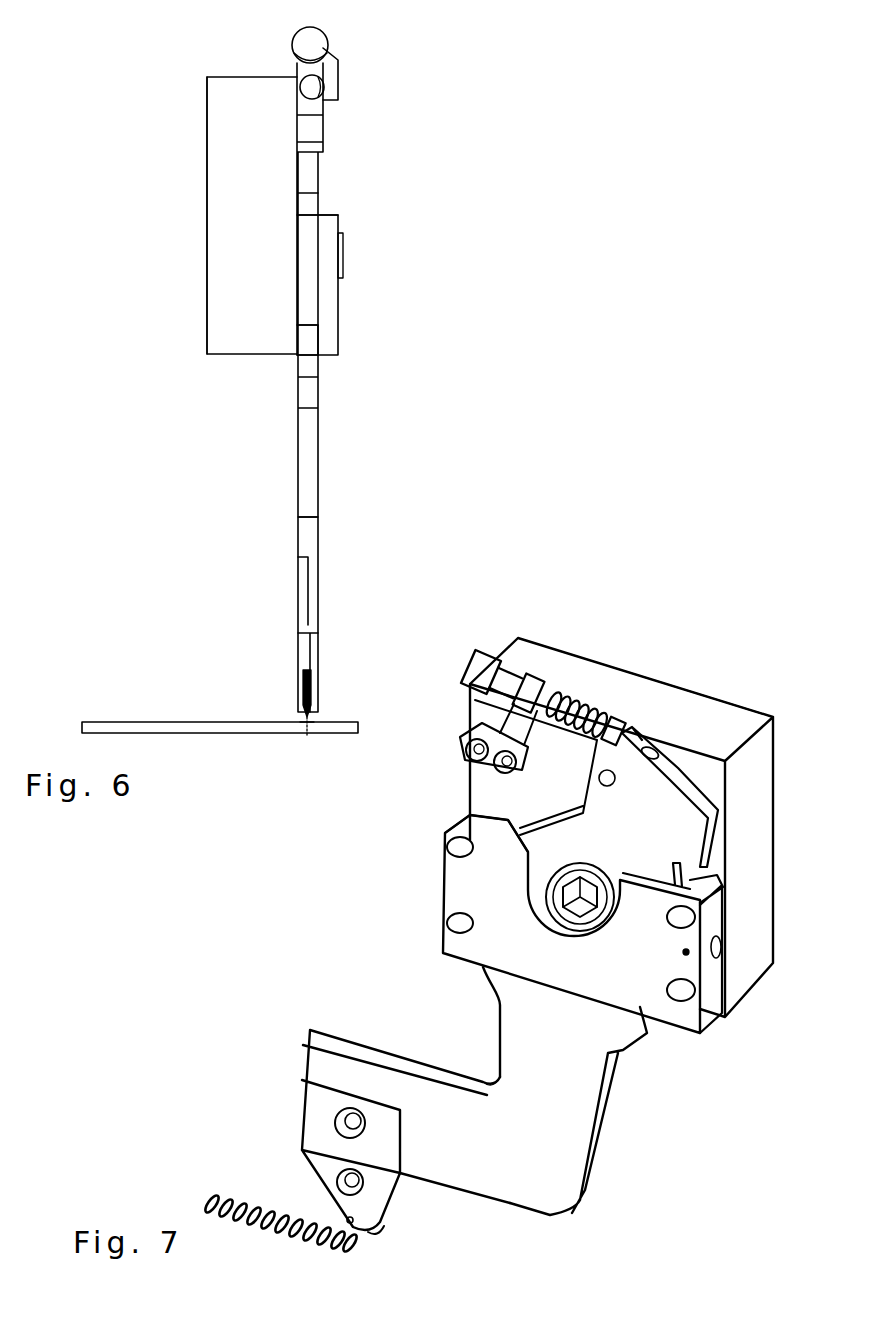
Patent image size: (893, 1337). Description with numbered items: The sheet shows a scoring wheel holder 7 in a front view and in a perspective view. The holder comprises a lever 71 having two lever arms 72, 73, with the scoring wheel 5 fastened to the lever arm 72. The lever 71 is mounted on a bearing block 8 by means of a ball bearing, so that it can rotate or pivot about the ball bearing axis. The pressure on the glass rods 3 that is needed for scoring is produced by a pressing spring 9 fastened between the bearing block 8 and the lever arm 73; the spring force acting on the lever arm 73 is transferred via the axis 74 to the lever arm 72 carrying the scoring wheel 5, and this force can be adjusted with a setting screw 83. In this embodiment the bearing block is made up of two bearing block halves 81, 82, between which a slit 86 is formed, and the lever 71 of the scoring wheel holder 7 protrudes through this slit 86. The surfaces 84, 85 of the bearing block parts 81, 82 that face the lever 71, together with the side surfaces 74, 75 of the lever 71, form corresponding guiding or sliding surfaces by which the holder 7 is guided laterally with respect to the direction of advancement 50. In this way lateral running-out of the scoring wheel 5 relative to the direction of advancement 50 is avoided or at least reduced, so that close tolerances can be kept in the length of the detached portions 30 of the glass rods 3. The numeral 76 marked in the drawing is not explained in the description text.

In FIG. 6, the glass rods 3 is at (172, 734).
In FIG. 7, the glass rods 3 is at (672, 778).
In FIG. 6, the scoring wheel 5 is at (303, 695).
In FIG. 7, the scoring wheel 5 is at (377, 1223).
In FIG. 6, the scoring wheel holder 7 is at (205, 517).
In FIG. 7, the scoring wheel holder 7 is at (396, 966).
In FIG. 6, the bearing block 8 is at (178, 284).
In FIG. 7, the bearing block 8 is at (577, 629).
In FIG. 7, the pressing spring 9 is at (558, 732).
In FIG. 6, the detached portions 30 is at (347, 736).
In FIG. 7, the direction of advancement 50 is at (448, 1272).
In FIG. 6, the lever 71 is at (336, 476).
In FIG. 7, the lever 71 is at (633, 1150).
In FIG. 6, the lever arm 72 is at (298, 560).
In FIG. 7, the lever arm 72 is at (300, 1043).
In FIG. 6, the lever arm 73 is at (340, 100).
In FIG. 6, the axis 74 is at (343, 263).
In FIG. 7, the axis 74 is at (590, 905).
In FIG. 6, the side surface 75 is at (318, 333).
In FIG. 7, the side surface 75 is at (450, 858).
In FIG. 6, the guide rod 76 is at (297, 172).
In FIG. 6, the bearing block half 81 is at (327, 300).
In FIG. 7, the bearing block half 81 is at (710, 985).
In FIG. 6, the bearing block half 82 is at (240, 340).
In FIG. 7, the bearing block half 82 is at (737, 918).
In FIG. 6, the setting screw 83 is at (328, 38).
In FIG. 7, the setting screw 83 is at (483, 648).
In FIG. 6, the surface 84 is at (318, 193).
In FIG. 7, the surface 84 is at (553, 780).
In FIG. 6, the surface 85 is at (320, 342).
In FIG. 7, the slit 86 is at (594, 824).